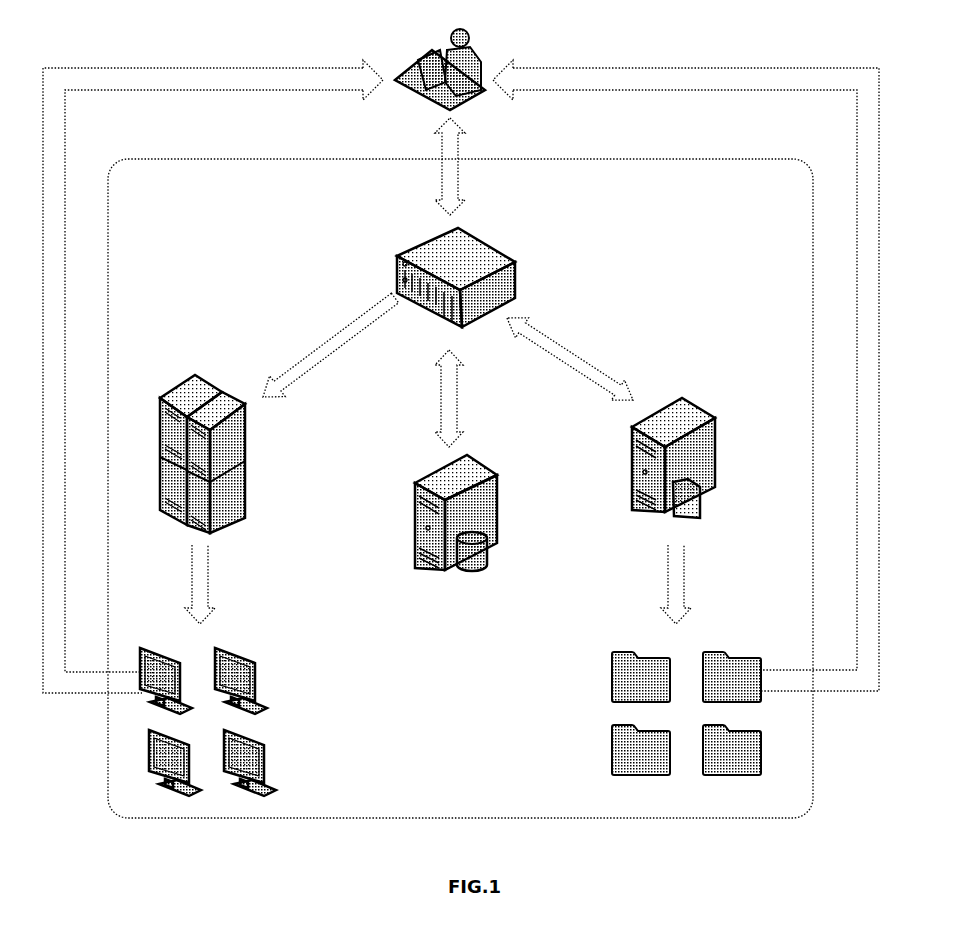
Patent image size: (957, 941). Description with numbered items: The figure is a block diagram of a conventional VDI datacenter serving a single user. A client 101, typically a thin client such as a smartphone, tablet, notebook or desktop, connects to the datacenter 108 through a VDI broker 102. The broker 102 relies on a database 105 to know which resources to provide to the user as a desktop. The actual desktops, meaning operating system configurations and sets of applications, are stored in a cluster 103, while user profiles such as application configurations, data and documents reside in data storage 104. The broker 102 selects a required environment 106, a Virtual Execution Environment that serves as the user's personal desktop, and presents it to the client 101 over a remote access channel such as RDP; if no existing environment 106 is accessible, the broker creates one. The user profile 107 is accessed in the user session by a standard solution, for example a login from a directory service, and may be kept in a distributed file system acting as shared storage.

The client 101 is at (487, 48).
The VDI broker 102 is at (505, 245).
The cluster 103 is at (187, 375).
The data storage 104 is at (690, 400).
The database 105 is at (485, 455).
The environment 106 is at (258, 660).
The user profile 107 is at (605, 665).
The data center 108 is at (700, 160).